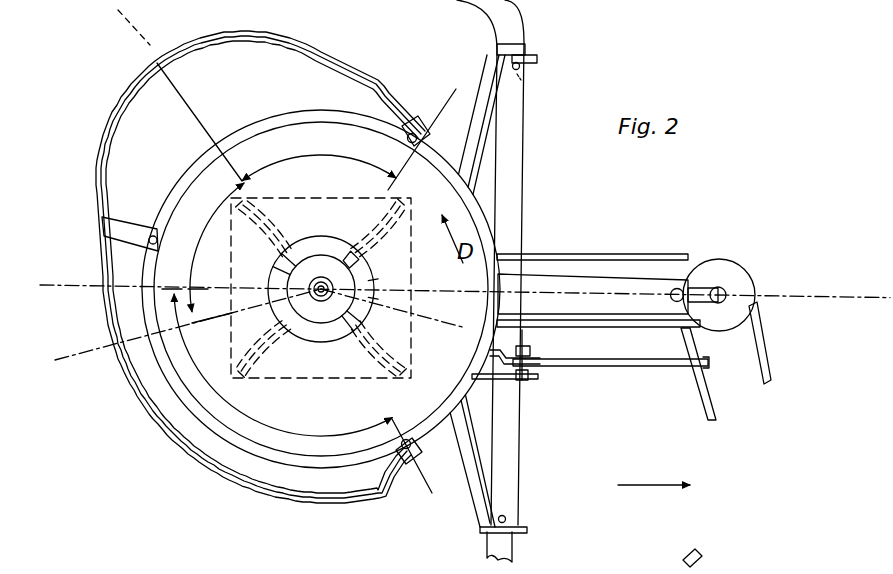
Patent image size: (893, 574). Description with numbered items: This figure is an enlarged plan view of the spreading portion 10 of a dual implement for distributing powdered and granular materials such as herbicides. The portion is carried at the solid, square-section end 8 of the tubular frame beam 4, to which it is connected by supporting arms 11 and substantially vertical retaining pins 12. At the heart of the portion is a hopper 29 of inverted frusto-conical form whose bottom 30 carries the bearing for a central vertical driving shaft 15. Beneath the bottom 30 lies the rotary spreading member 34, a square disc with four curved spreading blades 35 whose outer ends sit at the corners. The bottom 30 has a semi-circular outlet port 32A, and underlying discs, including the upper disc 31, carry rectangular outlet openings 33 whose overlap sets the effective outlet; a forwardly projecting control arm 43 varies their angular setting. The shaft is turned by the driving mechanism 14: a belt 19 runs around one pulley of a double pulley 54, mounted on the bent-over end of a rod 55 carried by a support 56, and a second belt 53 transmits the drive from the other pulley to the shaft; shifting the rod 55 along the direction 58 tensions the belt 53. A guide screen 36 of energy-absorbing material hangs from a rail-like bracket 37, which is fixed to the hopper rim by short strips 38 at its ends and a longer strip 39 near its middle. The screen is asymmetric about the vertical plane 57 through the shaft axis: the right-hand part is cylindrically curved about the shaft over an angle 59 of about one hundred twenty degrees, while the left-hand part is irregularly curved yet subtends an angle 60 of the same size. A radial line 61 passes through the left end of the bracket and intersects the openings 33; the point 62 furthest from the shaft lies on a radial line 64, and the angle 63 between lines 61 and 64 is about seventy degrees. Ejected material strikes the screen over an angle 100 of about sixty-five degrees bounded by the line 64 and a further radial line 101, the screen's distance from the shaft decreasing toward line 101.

The frame beam 4 is at (512, 548).
The end of frame beam 8 is at (520, 205).
The spreading portion 10 is at (200, 150).
The supporting arms 11 is at (488, 72).
The retaining pins 12 is at (520, 67).
The driving mechanism 14 is at (603, 265).
The driving shaft 15 is at (318, 300).
The V-belt, rope or the like 19 is at (714, 404).
The hopper 29 is at (206, 174).
The hopper bottom 30 is at (318, 344).
The upper disc 31 is at (368, 322).
The outlet port 32A is at (376, 280).
The outlet openings 33 is at (360, 254).
The rotary spreading member 34 is at (312, 380).
The spreading blades 35 is at (244, 374).
The guide screen 36 is at (334, 50).
The rail-like bracket 37 is at (294, 48).
The short strips 38 is at (418, 140).
The longer strip 39 is at (128, 232).
The control arm 43 is at (610, 367).
The V-belt, rope or the like 53 is at (564, 328).
The double pulley 54 is at (742, 278).
The rod 55 is at (719, 287).
The support 56 is at (630, 276).
The vertical plane 57 is at (568, 270).
The direction 58 is at (626, 488).
The angle 59 is at (265, 428).
The angle 60 is at (284, 279).
The radial line 61 is at (445, 106).
The point 62 is at (160, 62).
The angle 63 is at (336, 160).
The radial line 64 is at (192, 108).
The angle 100 is at (212, 230).
The radial line 101 is at (104, 350).